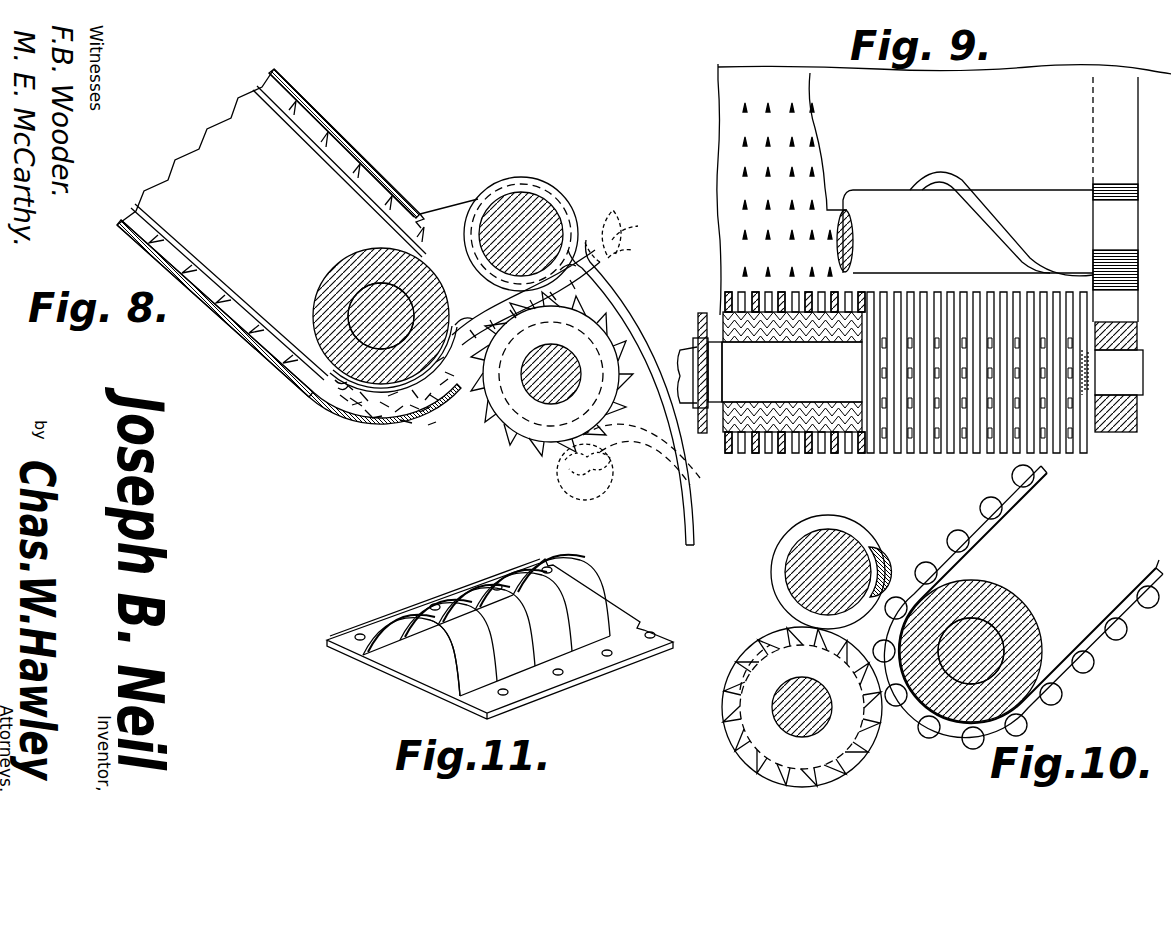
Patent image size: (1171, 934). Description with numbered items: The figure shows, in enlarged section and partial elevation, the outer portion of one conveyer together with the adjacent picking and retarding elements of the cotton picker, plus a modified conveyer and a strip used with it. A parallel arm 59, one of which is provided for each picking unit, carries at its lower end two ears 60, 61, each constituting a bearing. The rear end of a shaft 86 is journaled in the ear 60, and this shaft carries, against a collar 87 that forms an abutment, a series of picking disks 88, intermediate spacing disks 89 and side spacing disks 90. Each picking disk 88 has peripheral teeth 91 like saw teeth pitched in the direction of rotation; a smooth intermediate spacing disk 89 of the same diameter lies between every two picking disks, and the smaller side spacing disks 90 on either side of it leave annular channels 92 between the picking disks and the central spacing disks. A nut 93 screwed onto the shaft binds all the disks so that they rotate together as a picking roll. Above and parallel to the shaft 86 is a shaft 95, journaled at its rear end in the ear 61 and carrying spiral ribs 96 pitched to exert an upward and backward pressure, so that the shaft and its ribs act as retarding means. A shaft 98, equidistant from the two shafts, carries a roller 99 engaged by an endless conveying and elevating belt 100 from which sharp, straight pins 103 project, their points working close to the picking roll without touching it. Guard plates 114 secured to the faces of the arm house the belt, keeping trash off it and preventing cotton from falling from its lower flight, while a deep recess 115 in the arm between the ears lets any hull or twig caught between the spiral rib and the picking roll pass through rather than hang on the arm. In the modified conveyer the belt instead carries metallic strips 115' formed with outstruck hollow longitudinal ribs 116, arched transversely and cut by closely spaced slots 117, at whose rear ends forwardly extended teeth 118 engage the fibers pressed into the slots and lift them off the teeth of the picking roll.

In FIG. 9, the arm 59 is at (1100, 142).
In FIG. 8, the ear 60 is at (627, 336).
In FIG. 9, the ear 60 is at (1133, 432).
In FIG. 9, the ear 61 is at (1100, 216).
In FIG. 8, the shaft 86 is at (533, 408).
In FIG. 9, the shaft 86 is at (1127, 395).
In FIG. 10, the shaft 86 is at (790, 718).
In FIG. 9, the collar 87 is at (692, 328).
In FIG. 8, the picking disk 88 is at (477, 412).
In FIG. 9, the picking disk 88 is at (730, 456).
In FIG. 10, the picking disk 88 is at (875, 760).
In FIG. 8, the intermediate spacing disk 89 is at (530, 447).
In FIG. 9, the intermediate spacing disk 89 is at (738, 460).
In FIG. 10, the intermediate spacing disk 89 is at (727, 698).
In FIG. 9, the side spacing disk 90 is at (840, 456).
In FIG. 10, the side spacing disk 90 is at (736, 666).
In FIG. 8, the peripheral teeth 91 is at (602, 454).
In FIG. 10, the peripheral teeth 91 is at (772, 652).
In FIG. 9, the annular channel 92 is at (767, 456).
In FIG. 9, the nut 93 is at (1087, 337).
In FIG. 8, the shaft 95 is at (548, 208).
In FIG. 9, the shaft 95 is at (890, 192).
In FIG. 10, the shaft 95 is at (860, 549).
In FIG. 8, the spiral rib 96 is at (519, 179).
In FIG. 9, the spiral rib 96 is at (946, 178).
In FIG. 10, the spiral rib 96 is at (852, 528).
In FIG. 8, the shaft 98 is at (372, 288).
In FIG. 10, the shaft 98 is at (982, 632).
In FIG. 8, the roller 99 is at (320, 288).
In FIG. 10, the roller 99 is at (1030, 625).
In FIG. 8, the endless conveying and elevating belt 100 is at (307, 142).
In FIG. 9, the endless conveying and elevating belt 100 is at (725, 126).
In FIG. 8, the sharp pin 103 is at (377, 163).
In FIG. 9, the sharp pin 103 is at (742, 197).
In FIG. 8, the guard plate 114 is at (332, 120).
In FIG. 8, the recess 115 is at (526, 297).
In FIG. 10, the metallic strip 115' is at (1019, 607).
In FIG. 11, the metallic strip 115' is at (435, 595).
In FIG. 8, the hollow longitudinal rib 116 is at (277, 358).
In FIG. 10, the hollow longitudinal rib 116 is at (1010, 492).
In FIG. 11, the hollow longitudinal rib 116 is at (443, 649).
In FIG. 11, the slot 117 is at (583, 597).
In FIG. 11, the tooth 118 is at (612, 618).